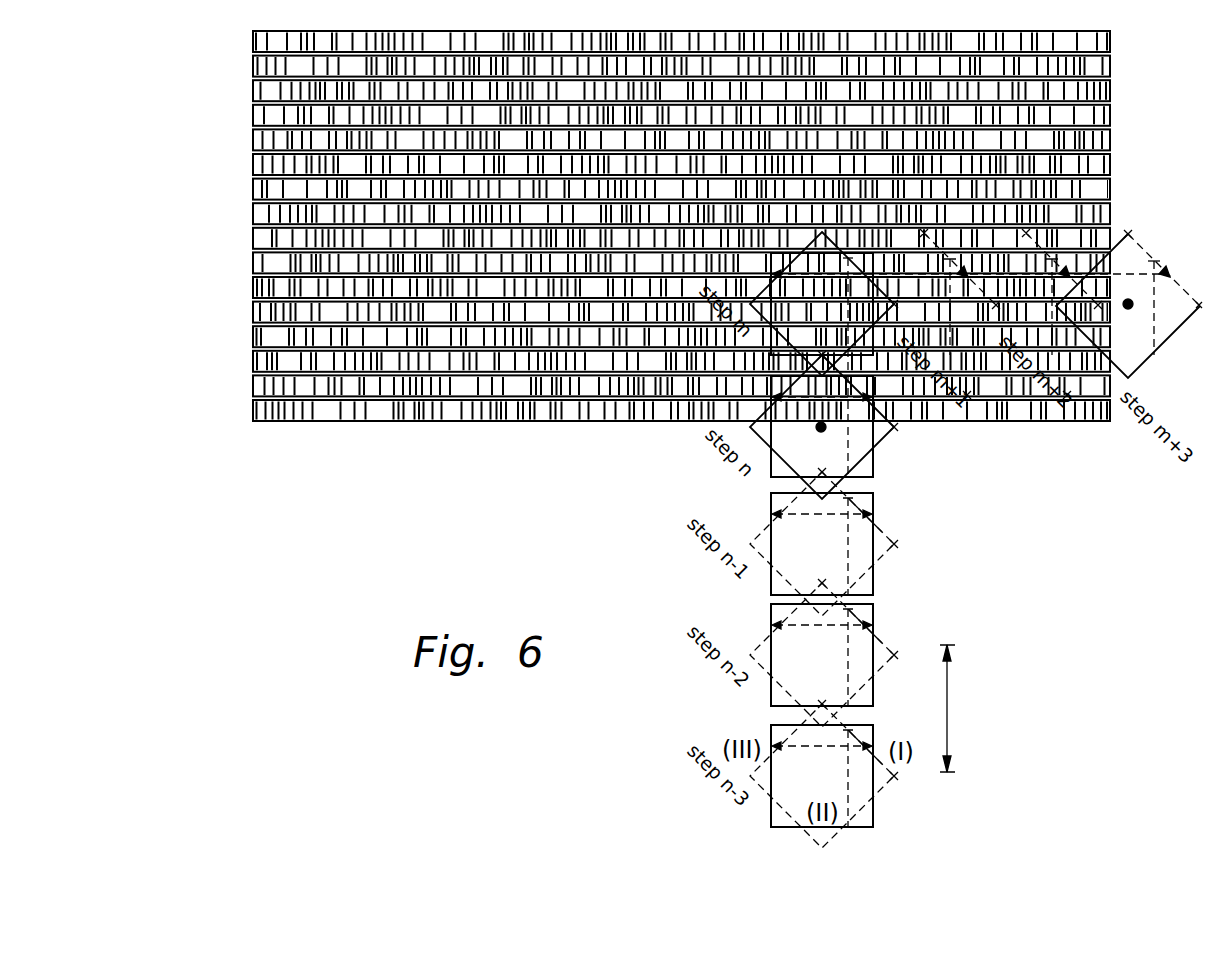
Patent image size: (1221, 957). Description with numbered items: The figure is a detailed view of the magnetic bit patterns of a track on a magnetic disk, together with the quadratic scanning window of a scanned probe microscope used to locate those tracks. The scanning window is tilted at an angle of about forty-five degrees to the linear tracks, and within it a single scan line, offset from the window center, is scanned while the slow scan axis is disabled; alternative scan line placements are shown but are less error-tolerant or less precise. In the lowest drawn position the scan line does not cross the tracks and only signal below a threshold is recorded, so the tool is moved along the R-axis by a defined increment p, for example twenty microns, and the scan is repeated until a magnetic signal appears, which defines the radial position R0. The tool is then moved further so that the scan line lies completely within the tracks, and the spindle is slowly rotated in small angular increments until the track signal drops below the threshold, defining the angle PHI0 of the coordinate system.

The radial reference position R0 is at (841, 427).
The defined angle of the coordinate system PHI0 is at (1129, 289).
The pitch p is at (996, 708).